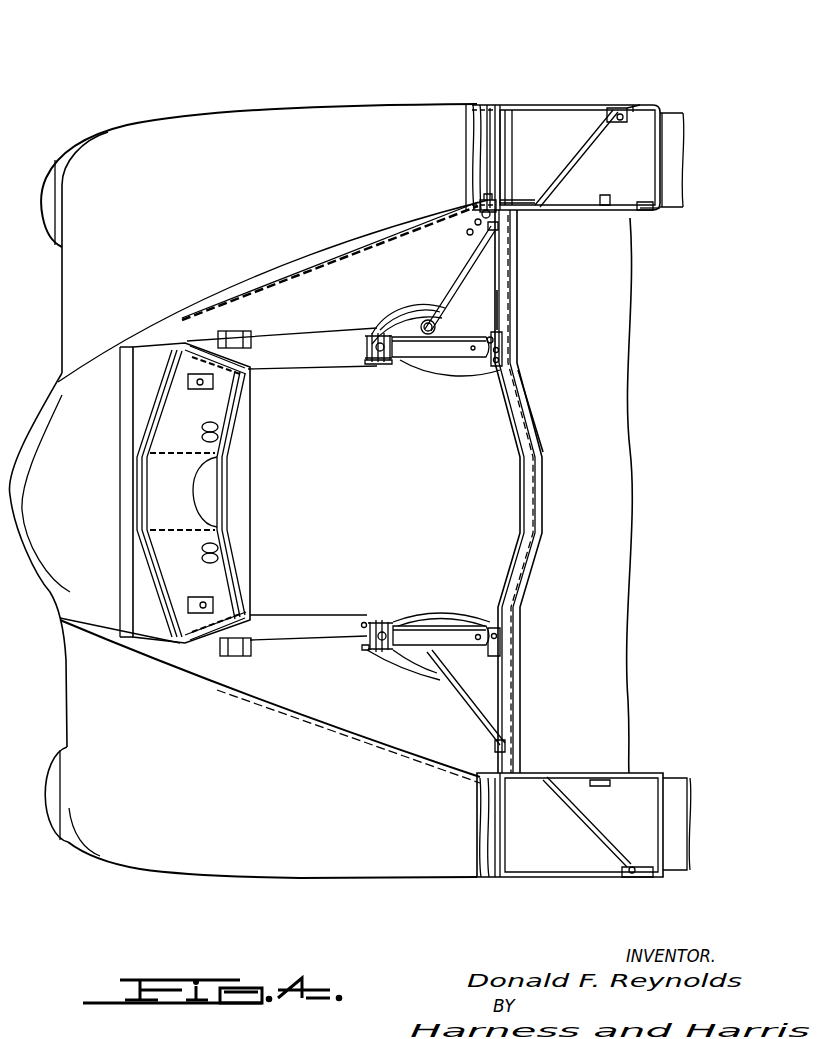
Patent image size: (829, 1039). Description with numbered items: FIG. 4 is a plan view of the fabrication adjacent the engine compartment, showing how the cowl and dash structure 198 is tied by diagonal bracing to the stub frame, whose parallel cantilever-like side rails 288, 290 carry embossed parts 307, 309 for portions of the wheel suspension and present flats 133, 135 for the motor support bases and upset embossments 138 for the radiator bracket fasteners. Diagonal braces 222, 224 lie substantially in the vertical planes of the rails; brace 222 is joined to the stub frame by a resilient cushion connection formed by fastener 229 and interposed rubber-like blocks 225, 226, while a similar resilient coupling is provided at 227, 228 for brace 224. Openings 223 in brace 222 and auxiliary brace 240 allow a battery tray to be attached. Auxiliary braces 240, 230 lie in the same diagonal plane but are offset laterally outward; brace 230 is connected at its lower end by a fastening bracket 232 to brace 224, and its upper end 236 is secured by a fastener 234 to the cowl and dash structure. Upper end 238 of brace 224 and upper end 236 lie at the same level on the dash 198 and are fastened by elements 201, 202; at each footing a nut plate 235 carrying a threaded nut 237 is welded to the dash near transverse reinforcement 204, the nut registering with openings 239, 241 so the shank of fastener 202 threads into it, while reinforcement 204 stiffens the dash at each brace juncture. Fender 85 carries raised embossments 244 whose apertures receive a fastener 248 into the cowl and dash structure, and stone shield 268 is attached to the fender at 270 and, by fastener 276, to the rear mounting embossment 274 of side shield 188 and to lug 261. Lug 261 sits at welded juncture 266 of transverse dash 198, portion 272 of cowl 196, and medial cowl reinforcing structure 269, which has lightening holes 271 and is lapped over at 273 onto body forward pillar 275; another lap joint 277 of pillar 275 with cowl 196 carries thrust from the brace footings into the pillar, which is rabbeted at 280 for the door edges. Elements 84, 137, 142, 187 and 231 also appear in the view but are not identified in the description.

The lower fuselage skin 84 is at (150, 855).
The fender 85 is at (128, 132).
The flat 133 is at (218, 430).
The opposed flat 135 is at (215, 548).
The lower mounting bracket 137 is at (190, 603).
The upset embossments 138 is at (190, 378).
The spring retainer 142 is at (378, 365).
The lower diagonal brace 187 is at (300, 686).
The side shield 188 is at (290, 268).
The cowl 196 is at (575, 140).
The cowl and dash structure 198 is at (520, 522).
The fastener element 201 is at (502, 642).
The fastener 202 is at (504, 346).
The transverse reinforcement 204 is at (518, 478).
The diagonal brace 222 is at (460, 626).
The openings 223 is at (478, 632).
The diagonal brace 224 is at (420, 328).
The rubber-like block 225 is at (366, 633).
The rubber-like block 226 is at (380, 620).
The resilient coupling 227 is at (366, 349).
The resilient coupling 228 is at (388, 332).
The fastener 229 is at (395, 620).
The auxiliary brace 230 is at (470, 250).
The upper curved guide 231 is at (452, 364).
The fastening bracket 232 is at (428, 320).
The fastener 234 is at (470, 215).
The nut plate 235 is at (504, 354).
The upper end of auxiliary brace 236 is at (465, 228).
The threaded nut 237 is at (510, 340).
The upper end of brace 238 is at (510, 390).
The opening 239 is at (490, 336).
The auxiliary brace 240 is at (472, 718).
The opening 241 is at (504, 364).
The raised embossments 244 is at (448, 660).
The fastener 248 is at (620, 122).
The lug 261 is at (462, 200).
The welded juncture 266 is at (512, 236).
The stone shield 268 is at (506, 138).
The cowl reinforcing structure 269 is at (650, 212).
The fastening elements 270 is at (507, 115).
The lightening holes 271 is at (588, 205).
The cowl portion 272 is at (528, 200).
The lap 273 is at (645, 213).
The rear mounting embossment 274 is at (482, 106).
The body forward pillar 275 is at (672, 150).
The fastener 276 is at (478, 104).
The lap joint 277 is at (636, 106).
The rabbet 280 is at (686, 125).
The side rail 288 is at (280, 340).
The side rail 290 is at (400, 662).
The embossed part 307 is at (228, 334).
The embossed part 309 is at (232, 656).